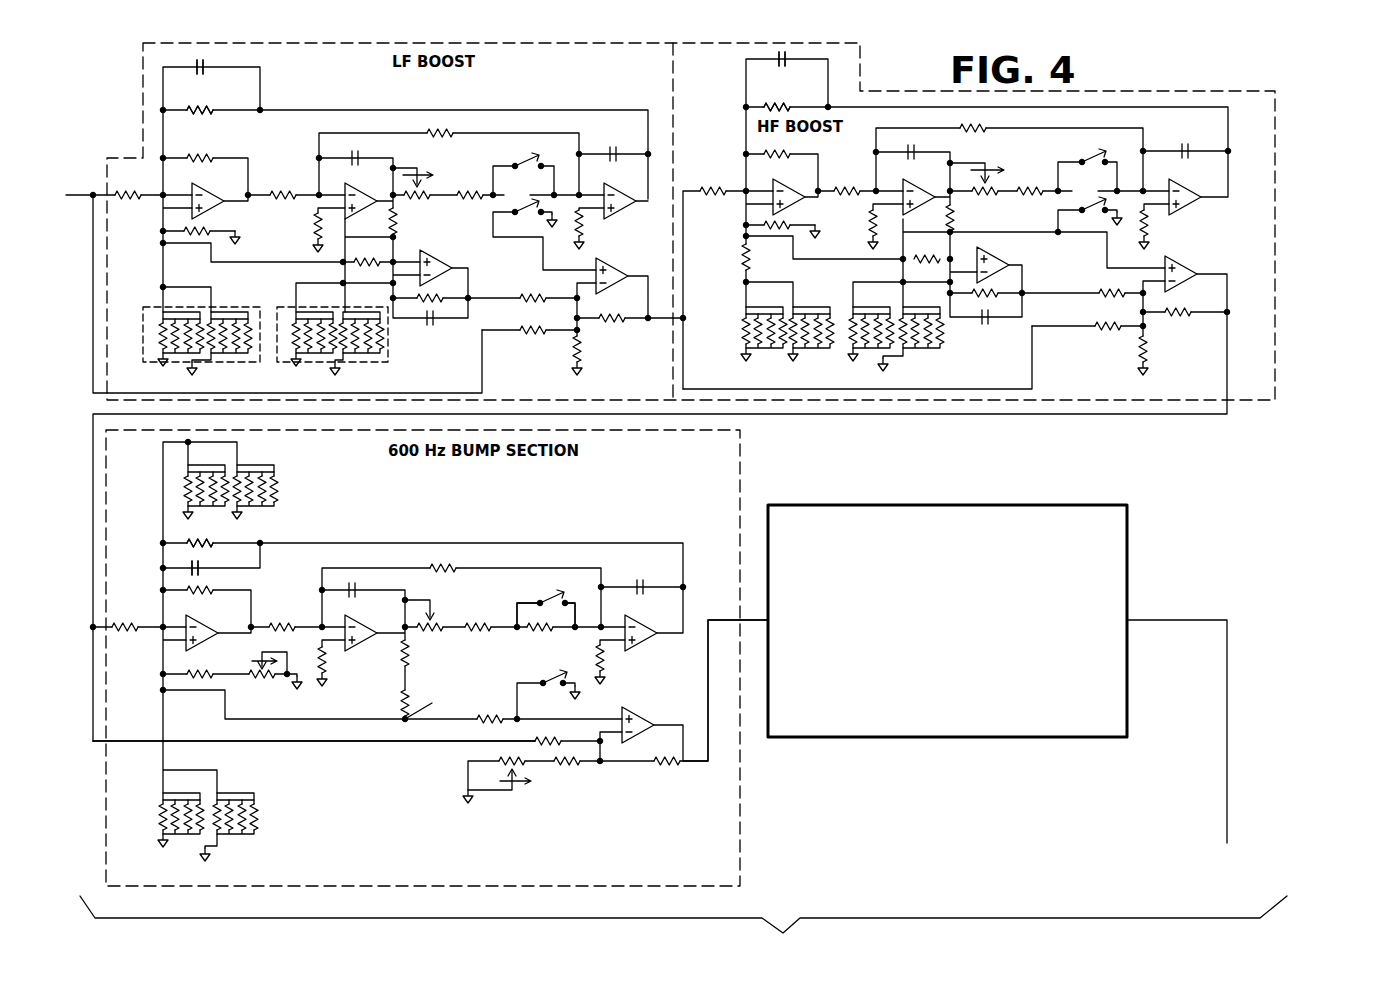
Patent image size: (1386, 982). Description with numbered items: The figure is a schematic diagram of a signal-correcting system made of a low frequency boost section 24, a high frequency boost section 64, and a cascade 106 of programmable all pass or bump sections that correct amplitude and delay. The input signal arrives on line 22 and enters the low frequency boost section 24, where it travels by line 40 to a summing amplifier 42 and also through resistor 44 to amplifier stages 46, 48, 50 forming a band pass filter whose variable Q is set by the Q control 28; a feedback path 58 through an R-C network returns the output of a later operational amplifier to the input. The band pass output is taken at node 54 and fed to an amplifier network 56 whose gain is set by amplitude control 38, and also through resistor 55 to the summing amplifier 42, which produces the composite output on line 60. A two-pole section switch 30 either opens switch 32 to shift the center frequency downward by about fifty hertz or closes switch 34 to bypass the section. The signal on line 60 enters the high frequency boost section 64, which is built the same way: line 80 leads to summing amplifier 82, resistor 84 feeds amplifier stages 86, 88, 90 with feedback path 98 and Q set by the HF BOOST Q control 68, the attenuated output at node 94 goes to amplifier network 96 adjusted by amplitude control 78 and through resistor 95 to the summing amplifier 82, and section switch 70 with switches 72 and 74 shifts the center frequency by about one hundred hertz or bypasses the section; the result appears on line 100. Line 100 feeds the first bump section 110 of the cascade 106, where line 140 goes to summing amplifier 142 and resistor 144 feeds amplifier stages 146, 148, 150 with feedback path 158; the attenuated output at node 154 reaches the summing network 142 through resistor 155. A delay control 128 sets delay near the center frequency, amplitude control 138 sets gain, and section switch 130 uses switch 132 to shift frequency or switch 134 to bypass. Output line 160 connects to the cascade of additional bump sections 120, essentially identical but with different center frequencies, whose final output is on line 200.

The line 22 is at (80, 194).
The low frequency boost section 24 is at (460, 42).
The Q control 28 is at (238, 362).
The two-pole section switch 30 is at (450, 224).
The switch 32 is at (528, 140).
The switch 34 is at (527, 220).
The amplitude control 38 is at (345, 362).
The line 40 is at (93, 375).
The summing amplifier 42 is at (646, 262).
The resistor 44 is at (150, 170).
The amplifier stage 46 is at (238, 185).
The amplifier stage 48 is at (385, 185).
The amplifier stage 50 is at (640, 184).
The node 54 is at (343, 263).
The resistor 55 is at (385, 258).
The amplifier network 56 is at (484, 259).
The feedback path 58 is at (240, 94).
The line 60 is at (661, 323).
The high frequency boost section 64 is at (728, 108).
The HF BOOST Q control 68 is at (784, 387).
The two pole section switch 70 is at (1028, 224).
The switch 72 is at (1087, 163).
The switch 74 is at (1097, 206).
The amplitude control 78 is at (923, 387).
The line 80 is at (1010, 389).
The summing amplifier 82 is at (1214, 260).
The resistor 84 is at (722, 180).
The amplifier stage 86 is at (811, 175).
The amplifier stage 88 is at (941, 175).
The amplifier stage 90 is at (1213, 177).
The node 94 is at (903, 262).
The resistor 95 is at (940, 254).
The amplifier network 96 is at (1029, 257).
The feedback path 98 is at (818, 87).
The line 100 is at (1227, 340).
The cascade 106 is at (683, 920).
The first bump section 110 is at (456, 887).
The cascade of additional bump sections 120 is at (958, 738).
The delay control 128 is at (257, 877).
The section switch 130 is at (528, 662).
The switch 132 is at (552, 600).
The switch 134 is at (543, 690).
The amplitude control 138 is at (323, 517).
The line 140 is at (330, 743).
The summing amplifier 142 is at (673, 707).
The resistor 144 is at (150, 620).
The amplifier stage 146 is at (214, 622).
The amplifier stage 148 is at (372, 622).
The amplifier stage 150 is at (652, 619).
The node 154 is at (433, 699).
The resistor 155 is at (505, 712).
The feedback path 158 is at (250, 568).
The output line 160 is at (699, 765).
The line 200 is at (1227, 742).